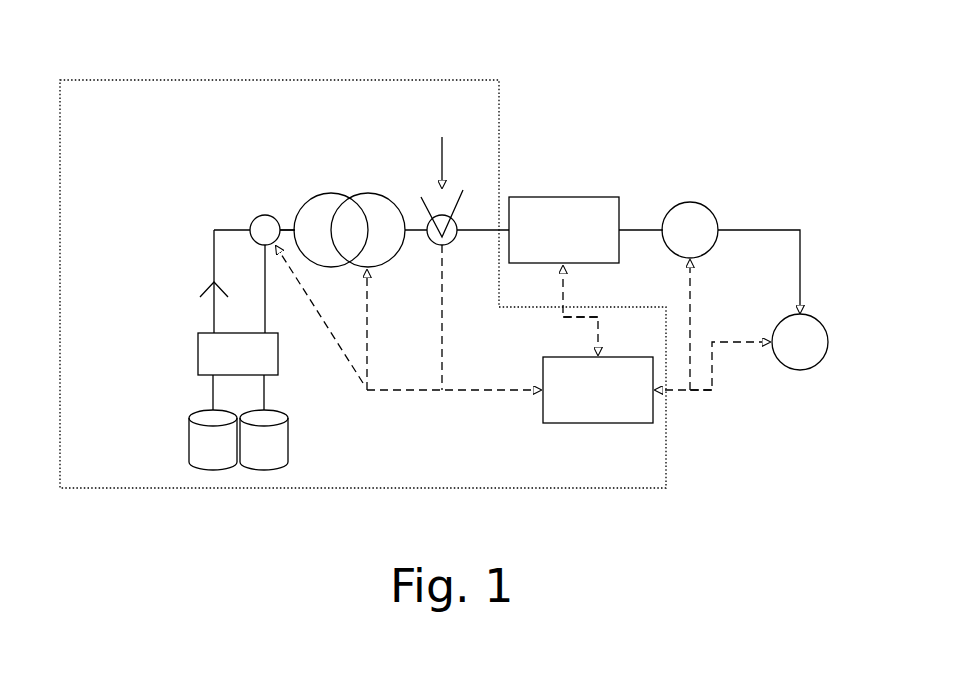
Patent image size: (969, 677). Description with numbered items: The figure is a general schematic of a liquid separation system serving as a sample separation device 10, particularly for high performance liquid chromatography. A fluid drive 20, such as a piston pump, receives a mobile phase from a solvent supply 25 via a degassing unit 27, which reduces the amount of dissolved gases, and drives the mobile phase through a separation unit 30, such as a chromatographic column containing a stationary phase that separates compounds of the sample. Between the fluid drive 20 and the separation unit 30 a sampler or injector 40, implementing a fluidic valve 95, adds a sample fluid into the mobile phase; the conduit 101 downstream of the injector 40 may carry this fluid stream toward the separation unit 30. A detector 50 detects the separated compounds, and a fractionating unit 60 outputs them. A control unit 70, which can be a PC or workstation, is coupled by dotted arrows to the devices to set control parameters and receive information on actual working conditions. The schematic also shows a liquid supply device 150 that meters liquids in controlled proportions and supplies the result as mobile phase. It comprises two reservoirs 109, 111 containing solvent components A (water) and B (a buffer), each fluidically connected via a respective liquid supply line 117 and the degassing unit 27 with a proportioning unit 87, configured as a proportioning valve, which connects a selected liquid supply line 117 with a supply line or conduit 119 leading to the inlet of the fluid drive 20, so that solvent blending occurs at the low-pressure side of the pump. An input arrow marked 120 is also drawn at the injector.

The sample separation device 10 is at (760, 170).
The fluid drive 20 is at (347, 195).
The solvent supply 25 is at (202, 476).
The degassing unit 27 is at (198, 353).
The separation unit 30 is at (557, 197).
The sampler or injector 40 is at (463, 190).
The detector 50 is at (692, 202).
The fractionating unit 60 is at (828, 342).
The control unit 70 is at (578, 423).
The proportioning unit 87 is at (256, 217).
The fluidic valve 95 is at (427, 213).
The conduit 101 is at (476, 232).
The reservoir 109 is at (213, 470).
The reservoir 111 is at (264, 470).
The liquid supply line 117 is at (213, 305).
The supply line or conduit 119 is at (288, 222).
The input 120 is at (448, 153).
The liquid supply device 150 is at (150, 80).